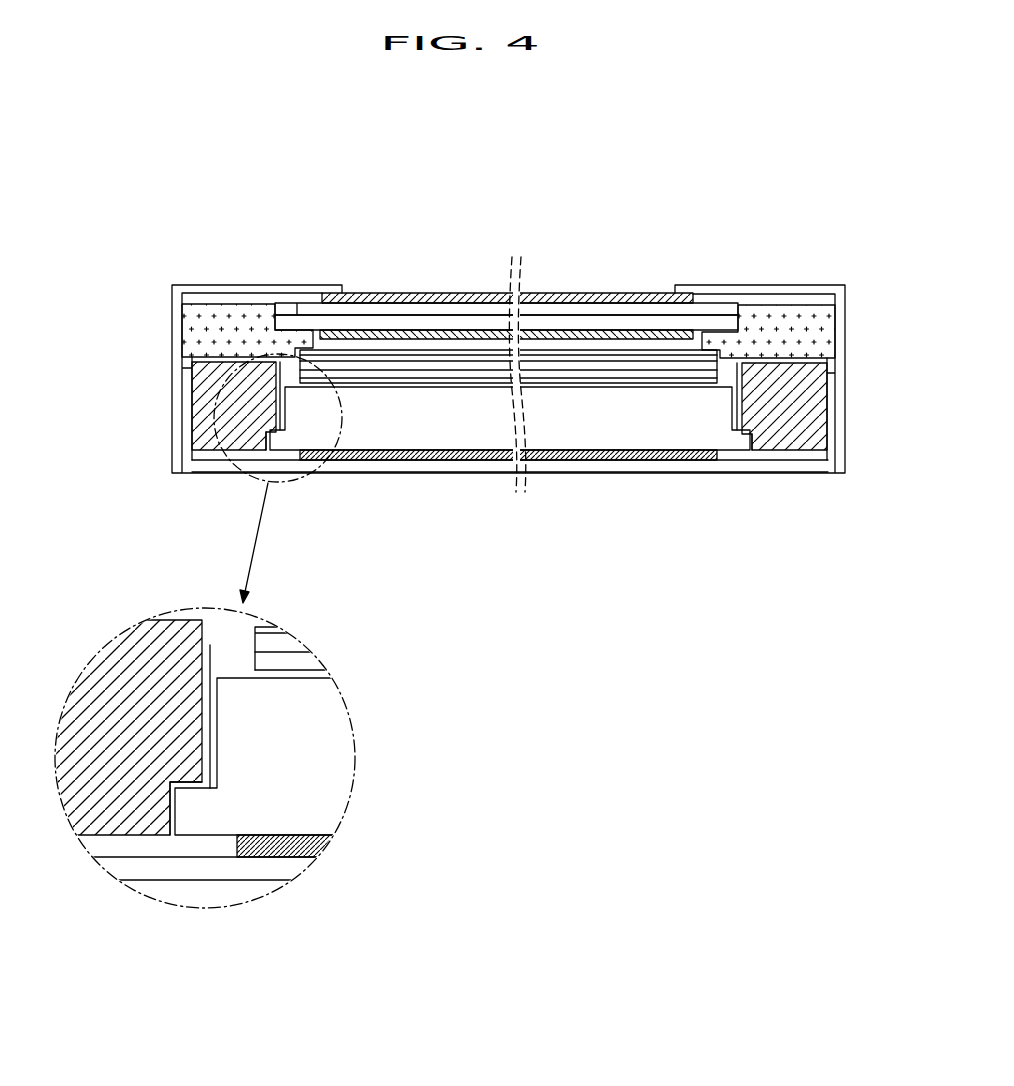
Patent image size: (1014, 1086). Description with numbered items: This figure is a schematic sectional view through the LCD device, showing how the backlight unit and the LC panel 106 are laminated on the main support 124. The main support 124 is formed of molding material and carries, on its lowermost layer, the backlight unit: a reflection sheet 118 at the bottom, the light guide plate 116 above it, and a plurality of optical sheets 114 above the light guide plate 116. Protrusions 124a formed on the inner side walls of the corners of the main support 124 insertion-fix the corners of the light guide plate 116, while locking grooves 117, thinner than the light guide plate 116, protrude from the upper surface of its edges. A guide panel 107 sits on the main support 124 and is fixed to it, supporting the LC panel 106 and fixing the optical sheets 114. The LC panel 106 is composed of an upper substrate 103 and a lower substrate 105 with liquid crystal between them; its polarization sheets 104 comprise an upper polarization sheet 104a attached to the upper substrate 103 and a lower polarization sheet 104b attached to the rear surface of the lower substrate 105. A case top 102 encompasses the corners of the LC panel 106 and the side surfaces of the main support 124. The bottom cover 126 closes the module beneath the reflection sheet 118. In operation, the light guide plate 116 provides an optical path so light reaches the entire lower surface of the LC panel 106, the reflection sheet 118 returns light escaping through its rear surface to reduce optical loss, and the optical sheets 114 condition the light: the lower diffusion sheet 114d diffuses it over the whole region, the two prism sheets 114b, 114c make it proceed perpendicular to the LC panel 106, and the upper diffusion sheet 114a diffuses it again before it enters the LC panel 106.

The case top 102 is at (775, 287).
The upper substrate 103 is at (570, 310).
The polarization sheets 104 is at (506, 263).
The upper polarization sheet 104a is at (388, 295).
The lower polarization sheet 104b is at (430, 333).
The lower substrate 105 is at (614, 325).
The LC panel 106 is at (506, 259).
The guide panel 107 is at (805, 327).
The optical sheets 114 is at (486, 513).
The upper diffusion sheet 114a is at (482, 536).
The prism sheet 114b is at (377, 368).
The prism sheet 114c is at (413, 360).
The lower diffusion sheet 114d is at (447, 355).
The light guide plate 116 is at (642, 440).
The locking groove 117 is at (737, 365).
The reflection sheet 118 is at (592, 457).
The main support 124 is at (788, 445).
The protrusion 124a is at (748, 433).
The bottom cover 126 is at (552, 466).